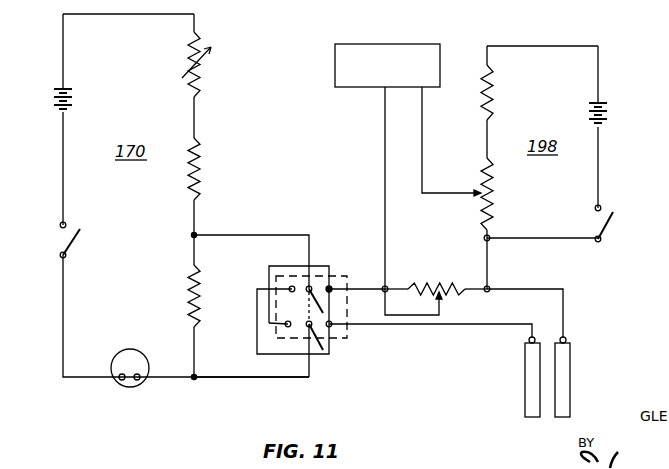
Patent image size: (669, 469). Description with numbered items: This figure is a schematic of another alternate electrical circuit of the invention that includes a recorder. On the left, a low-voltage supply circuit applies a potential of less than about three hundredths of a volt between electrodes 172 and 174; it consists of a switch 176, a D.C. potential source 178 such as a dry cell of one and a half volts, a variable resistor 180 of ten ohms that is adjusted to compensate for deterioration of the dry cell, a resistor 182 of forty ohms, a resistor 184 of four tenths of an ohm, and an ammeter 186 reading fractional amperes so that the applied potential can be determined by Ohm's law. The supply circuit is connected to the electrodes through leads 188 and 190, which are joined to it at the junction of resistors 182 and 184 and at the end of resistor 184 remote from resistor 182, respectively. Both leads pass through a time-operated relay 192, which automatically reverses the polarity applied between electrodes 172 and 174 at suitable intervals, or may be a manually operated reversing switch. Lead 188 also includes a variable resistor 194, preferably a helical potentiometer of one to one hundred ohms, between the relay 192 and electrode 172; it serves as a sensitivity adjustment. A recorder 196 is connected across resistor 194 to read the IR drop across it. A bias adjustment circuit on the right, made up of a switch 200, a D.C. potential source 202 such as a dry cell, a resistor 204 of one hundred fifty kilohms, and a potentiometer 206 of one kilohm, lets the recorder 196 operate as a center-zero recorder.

The electrode 172 is at (572, 347).
The electrode 174 is at (525, 399).
The switch 176 is at (78, 238).
The D.C. potential source 178 is at (73, 98).
The variable resistor 180 is at (204, 72).
The resistor 182 is at (203, 168).
The resistor 184 is at (186, 287).
The ammeter 186 is at (131, 349).
The lead 188 is at (234, 235).
The lead 190 is at (245, 381).
The time-operated relay 192 is at (347, 338).
The variable resistor 194 is at (420, 288).
The recorder 196 is at (408, 179).
The switch 200 is at (612, 221).
The D.C. potential source 202 is at (609, 110).
The resistor 204 is at (495, 102).
The potentiometer 206 is at (494, 204).